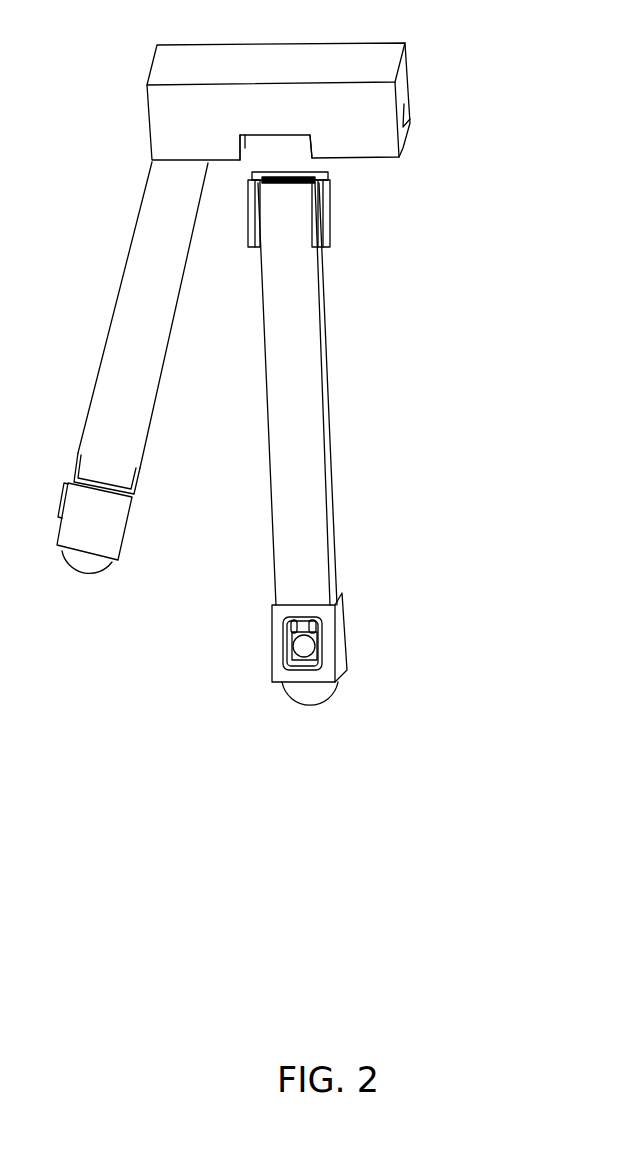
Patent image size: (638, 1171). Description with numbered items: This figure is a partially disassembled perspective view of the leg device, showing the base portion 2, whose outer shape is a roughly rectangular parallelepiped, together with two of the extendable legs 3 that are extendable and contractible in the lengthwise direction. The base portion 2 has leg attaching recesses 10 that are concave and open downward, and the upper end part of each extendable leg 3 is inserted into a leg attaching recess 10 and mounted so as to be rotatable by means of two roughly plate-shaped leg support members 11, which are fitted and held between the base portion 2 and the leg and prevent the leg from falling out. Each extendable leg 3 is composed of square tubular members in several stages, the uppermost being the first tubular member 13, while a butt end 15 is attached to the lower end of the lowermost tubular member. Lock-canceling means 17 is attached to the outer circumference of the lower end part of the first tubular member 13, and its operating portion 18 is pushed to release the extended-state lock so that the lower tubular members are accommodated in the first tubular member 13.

The base portion 2 is at (301, 86).
The extendable leg 3 is at (223, 454).
The leg attaching recess 10 is at (409, 125).
The leg support member 11 is at (245, 213).
The first tubular member 13 is at (167, 313).
The butt end 15 is at (83, 565).
The lock-canceling means 17 is at (345, 615).
The operating portion 18 is at (305, 648).